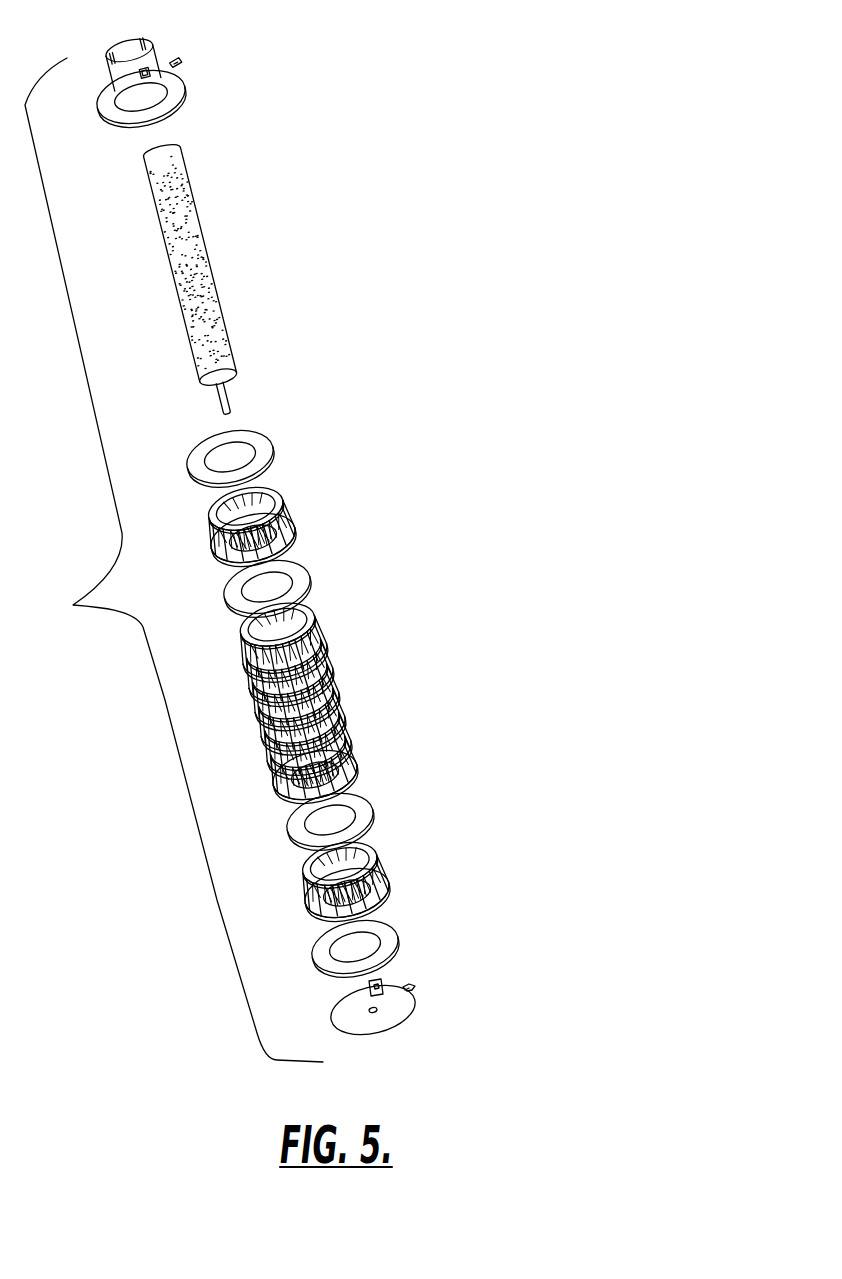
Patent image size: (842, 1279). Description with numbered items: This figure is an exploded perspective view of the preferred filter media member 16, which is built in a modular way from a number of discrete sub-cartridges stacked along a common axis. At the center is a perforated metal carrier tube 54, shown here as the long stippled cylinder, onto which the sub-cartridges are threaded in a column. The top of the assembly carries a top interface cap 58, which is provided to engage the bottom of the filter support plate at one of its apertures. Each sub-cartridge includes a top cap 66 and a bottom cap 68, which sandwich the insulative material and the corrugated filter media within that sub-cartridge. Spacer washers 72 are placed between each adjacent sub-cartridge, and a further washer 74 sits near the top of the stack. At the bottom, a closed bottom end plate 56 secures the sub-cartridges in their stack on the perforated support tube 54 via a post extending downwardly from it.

The filter media member 16 is at (407, 478).
The central perforated metal carrier tube 54 is at (215, 300).
The bottom end plate 56 is at (400, 1013).
The top interface cap 58 is at (155, 53).
The top cap 66 is at (375, 860).
The bottom cap 68 is at (387, 895).
The spacer washers 72 is at (367, 807).
The post 74 is at (207, 406).